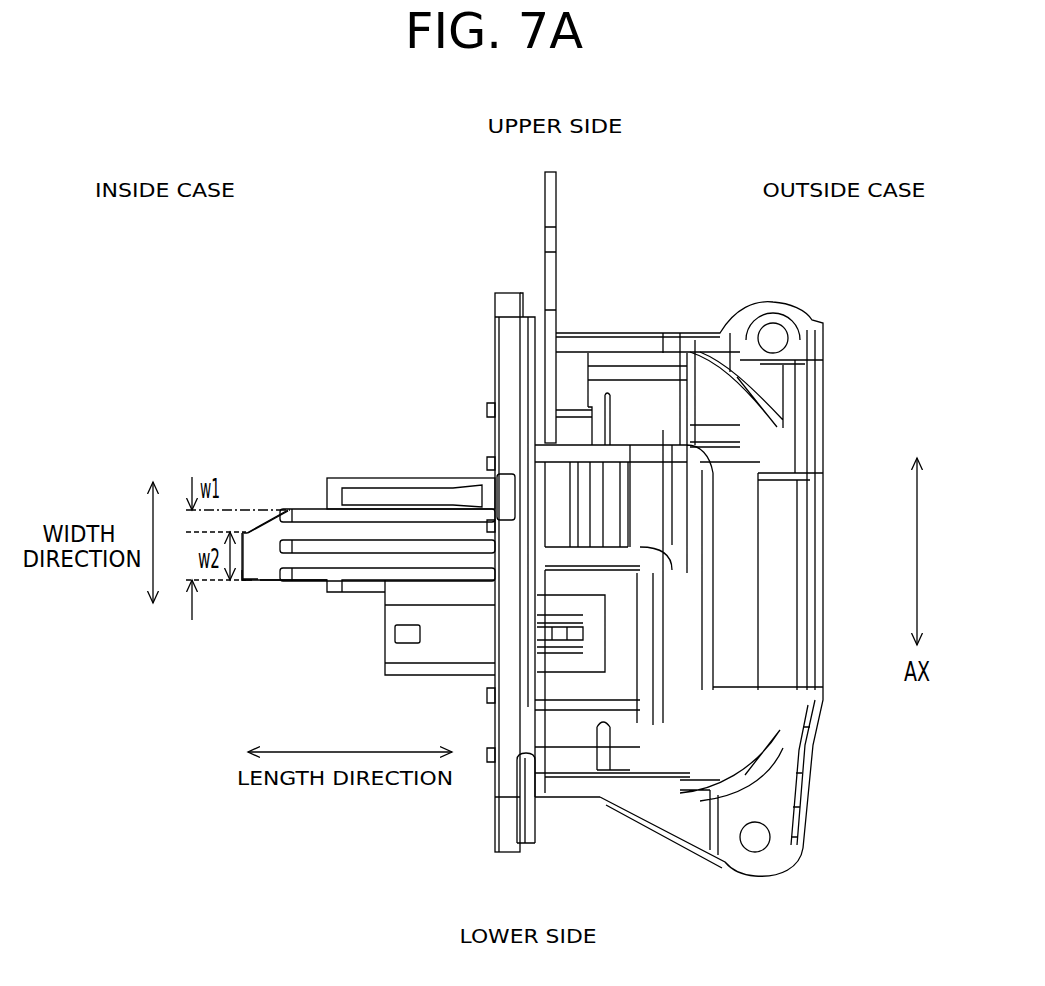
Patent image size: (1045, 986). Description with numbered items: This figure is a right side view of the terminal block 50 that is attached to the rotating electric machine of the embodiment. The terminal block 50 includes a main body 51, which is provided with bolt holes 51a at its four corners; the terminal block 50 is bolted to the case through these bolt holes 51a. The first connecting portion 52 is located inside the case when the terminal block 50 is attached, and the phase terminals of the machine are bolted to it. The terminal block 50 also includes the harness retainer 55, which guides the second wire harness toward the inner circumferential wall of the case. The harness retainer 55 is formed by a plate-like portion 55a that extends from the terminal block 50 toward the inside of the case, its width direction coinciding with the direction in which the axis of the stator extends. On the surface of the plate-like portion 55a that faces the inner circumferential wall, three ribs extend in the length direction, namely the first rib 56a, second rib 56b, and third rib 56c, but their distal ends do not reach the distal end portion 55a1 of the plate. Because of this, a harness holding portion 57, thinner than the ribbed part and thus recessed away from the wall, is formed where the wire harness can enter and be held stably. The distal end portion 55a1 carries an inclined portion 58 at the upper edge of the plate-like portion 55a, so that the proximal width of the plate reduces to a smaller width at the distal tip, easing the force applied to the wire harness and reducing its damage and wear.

The terminal block 50 is at (845, 898).
The main body 51 is at (494, 293).
The bolt hole 51a is at (523, 317).
The first connecting portion 52 is at (376, 458).
The harness retainer 55 is at (292, 593).
The plate-like portion 55a is at (285, 583).
The distal end portion 55a1 is at (240, 581).
The first rib 56a is at (358, 517).
The second rib 56b is at (345, 547).
The third rib 56c is at (310, 573).
The harness holding portion 57 is at (252, 577).
The inclined portion 58 is at (265, 532).